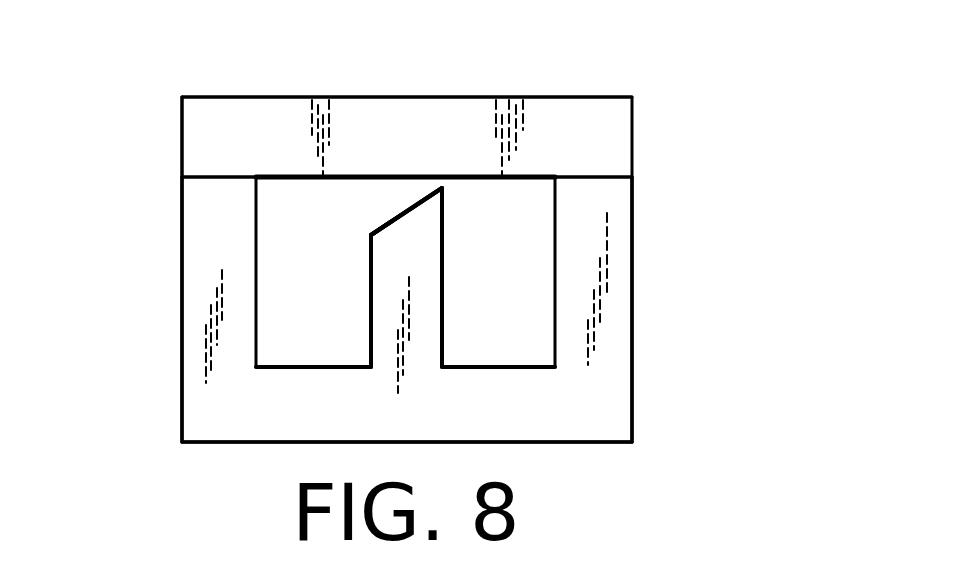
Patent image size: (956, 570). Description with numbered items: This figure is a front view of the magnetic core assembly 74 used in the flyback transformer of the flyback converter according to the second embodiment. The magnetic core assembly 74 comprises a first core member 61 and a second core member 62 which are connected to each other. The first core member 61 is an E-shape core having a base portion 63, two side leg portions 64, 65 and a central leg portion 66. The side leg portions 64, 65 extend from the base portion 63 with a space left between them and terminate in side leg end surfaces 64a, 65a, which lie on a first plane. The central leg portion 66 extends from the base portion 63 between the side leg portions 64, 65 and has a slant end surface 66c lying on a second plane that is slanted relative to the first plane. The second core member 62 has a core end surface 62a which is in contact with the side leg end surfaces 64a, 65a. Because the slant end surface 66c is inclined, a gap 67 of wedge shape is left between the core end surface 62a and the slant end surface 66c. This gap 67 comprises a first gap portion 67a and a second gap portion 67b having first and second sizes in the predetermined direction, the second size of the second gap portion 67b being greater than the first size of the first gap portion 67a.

The first core member 61 is at (639, 428).
The second core member 62 is at (633, 142).
The core end surface 62a is at (255, 200).
The base portion 63 is at (593, 432).
The side leg portion 64 is at (205, 326).
The side leg end surface 64a is at (212, 176).
The side leg portion 65 is at (615, 313).
The side leg end surface 65a is at (608, 177).
The central leg portion 66 is at (421, 280).
The slant end surface 66c is at (422, 199).
The gap 67 is at (389, 186).
The first gap portion 67a is at (444, 188).
The second gap portion 67b is at (397, 202).
The magnetic core assembly 74 is at (648, 92).